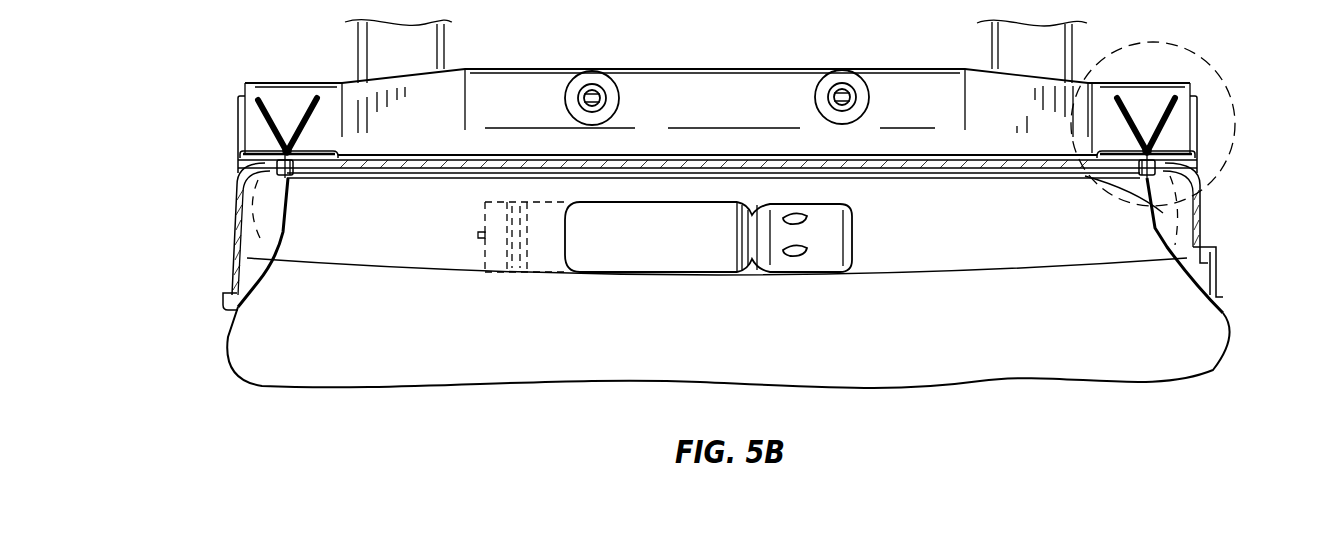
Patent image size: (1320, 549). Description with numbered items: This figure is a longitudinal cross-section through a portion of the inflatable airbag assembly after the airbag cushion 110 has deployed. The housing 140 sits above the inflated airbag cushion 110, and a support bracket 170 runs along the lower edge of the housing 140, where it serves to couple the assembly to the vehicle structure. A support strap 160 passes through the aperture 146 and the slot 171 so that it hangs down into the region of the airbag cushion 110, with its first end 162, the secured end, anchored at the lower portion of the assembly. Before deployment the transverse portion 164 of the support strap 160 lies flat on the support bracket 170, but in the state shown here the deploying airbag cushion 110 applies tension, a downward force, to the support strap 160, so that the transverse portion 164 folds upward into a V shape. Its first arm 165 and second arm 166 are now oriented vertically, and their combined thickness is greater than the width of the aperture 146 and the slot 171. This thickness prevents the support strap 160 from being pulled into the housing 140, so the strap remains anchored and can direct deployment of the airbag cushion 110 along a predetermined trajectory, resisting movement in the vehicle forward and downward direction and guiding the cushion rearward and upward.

The airbag cushion 110 is at (273, 278).
The housing 140 is at (233, 199).
The aperture 146 is at (340, 157).
The support strap 160 is at (280, 182).
The first end 162 is at (273, 225).
The transverse portion 164 is at (766, 76).
The first arm 165 is at (262, 97).
The second arm 166 is at (312, 94).
The support bracket 170 is at (240, 155).
The slot 171 is at (280, 150).